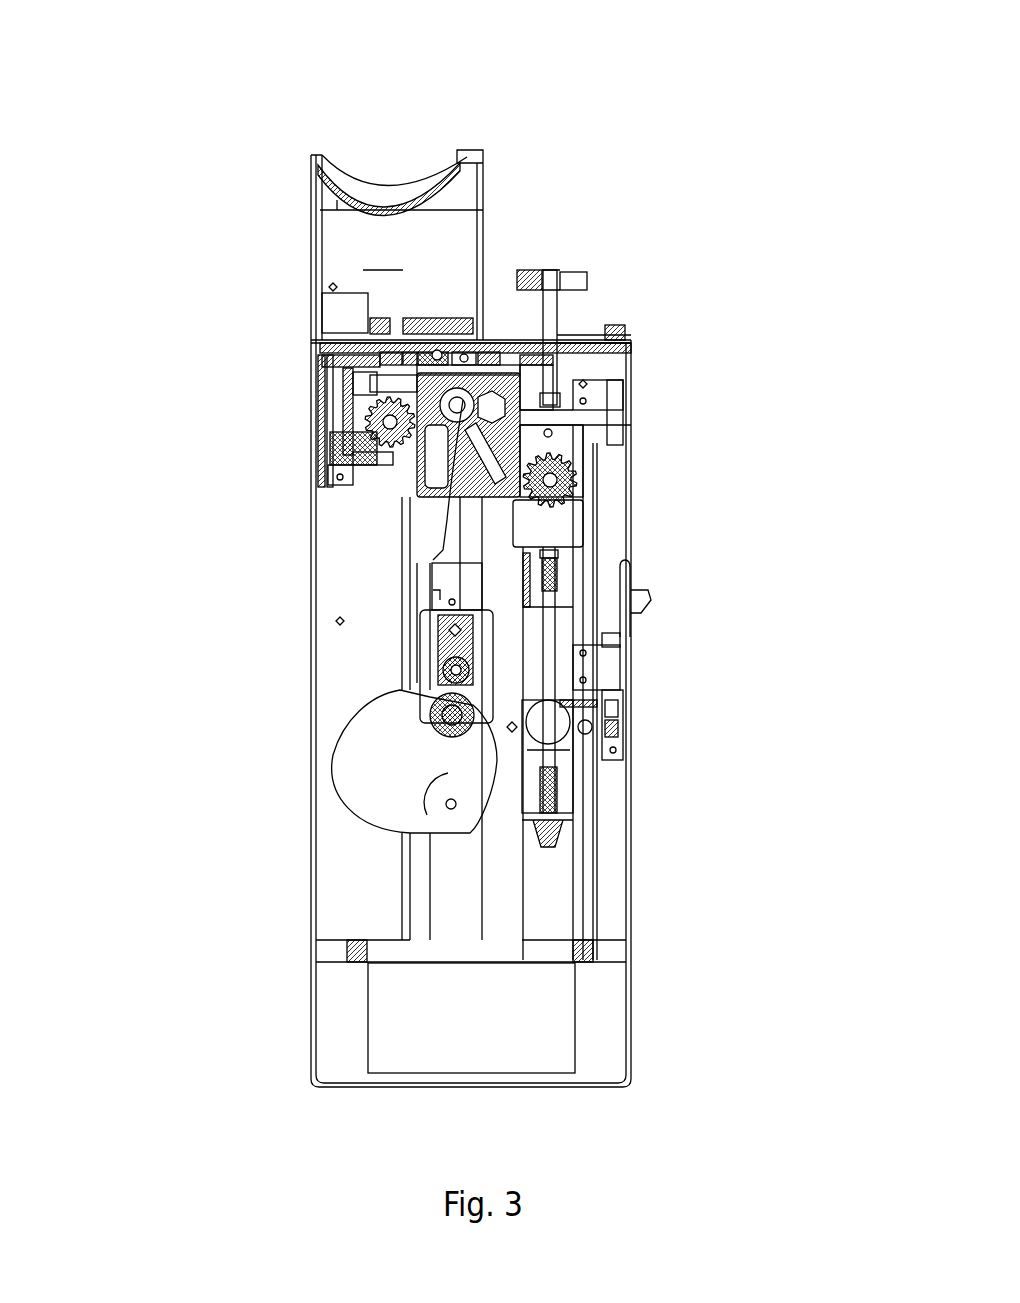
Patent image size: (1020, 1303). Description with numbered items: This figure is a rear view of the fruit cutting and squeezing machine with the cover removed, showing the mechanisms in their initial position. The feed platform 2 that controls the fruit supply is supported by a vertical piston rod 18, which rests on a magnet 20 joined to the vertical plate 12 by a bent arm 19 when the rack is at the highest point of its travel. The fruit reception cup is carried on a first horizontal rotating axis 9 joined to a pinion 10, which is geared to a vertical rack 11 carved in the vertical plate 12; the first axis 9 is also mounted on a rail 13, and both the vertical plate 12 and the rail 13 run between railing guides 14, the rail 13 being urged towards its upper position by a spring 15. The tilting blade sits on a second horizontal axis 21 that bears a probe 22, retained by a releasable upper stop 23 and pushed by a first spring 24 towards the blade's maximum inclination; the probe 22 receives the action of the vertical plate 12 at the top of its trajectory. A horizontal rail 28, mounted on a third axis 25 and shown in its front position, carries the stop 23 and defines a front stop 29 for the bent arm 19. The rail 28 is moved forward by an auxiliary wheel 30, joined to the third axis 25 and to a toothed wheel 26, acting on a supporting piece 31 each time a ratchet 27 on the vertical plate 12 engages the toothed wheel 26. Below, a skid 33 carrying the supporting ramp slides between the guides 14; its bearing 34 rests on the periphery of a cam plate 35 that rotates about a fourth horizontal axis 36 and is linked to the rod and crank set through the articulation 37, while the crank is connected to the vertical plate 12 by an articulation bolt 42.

The platform 2 is at (583, 267).
The first horizontal rotating axis 9 is at (575, 482).
The pinion 10 is at (573, 493).
The vertical rack 11 is at (550, 425).
The vertical plate 12 is at (418, 495).
The rail 13 is at (573, 530).
The railing guides 14 is at (425, 927).
The spring 15 is at (560, 795).
The vertical piston rod 18 is at (560, 313).
The bent arm 19 is at (620, 338).
The magnet 20 is at (548, 362).
The second horizontal axis 21 is at (345, 437).
The probe 22 is at (340, 413).
The releasable upper stop 23 is at (335, 400).
The first spring 24 is at (410, 445).
The third axis 25 is at (440, 348).
The toothed wheel 26 is at (437, 350).
The ratchet 27 is at (463, 350).
The horizontal rail 28 is at (352, 357).
The front stop 29 is at (488, 358).
The auxiliary wheel 30 is at (428, 348).
The supporting piece 31 is at (388, 350).
The skid 33 is at (430, 645).
The bearing 34 is at (445, 692).
The cam plate 35 is at (355, 785).
The fourth horizontal axis 36 is at (450, 810).
The articulation 37 is at (440, 727).
The articulation bolt 42 is at (433, 560).